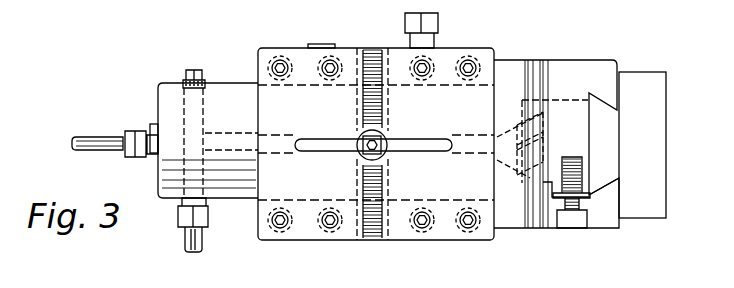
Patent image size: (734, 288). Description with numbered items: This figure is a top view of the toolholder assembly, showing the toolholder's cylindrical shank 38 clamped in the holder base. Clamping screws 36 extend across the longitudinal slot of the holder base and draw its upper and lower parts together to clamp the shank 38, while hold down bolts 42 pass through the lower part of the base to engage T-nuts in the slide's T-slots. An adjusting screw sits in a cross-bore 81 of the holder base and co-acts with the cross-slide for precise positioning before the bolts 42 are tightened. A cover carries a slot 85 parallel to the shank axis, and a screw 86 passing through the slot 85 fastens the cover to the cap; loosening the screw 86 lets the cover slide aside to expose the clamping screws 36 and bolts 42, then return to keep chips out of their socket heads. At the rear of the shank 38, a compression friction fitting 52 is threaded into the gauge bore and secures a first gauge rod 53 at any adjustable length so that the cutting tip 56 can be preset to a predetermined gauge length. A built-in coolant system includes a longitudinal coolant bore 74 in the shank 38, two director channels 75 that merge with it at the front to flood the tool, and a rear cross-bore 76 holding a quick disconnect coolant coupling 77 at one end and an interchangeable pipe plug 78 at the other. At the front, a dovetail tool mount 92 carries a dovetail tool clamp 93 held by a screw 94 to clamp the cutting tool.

The tool-holder clamping screws 36 is at (335, 57).
The cylindrical shank 38 is at (245, 83).
The hold down bolts 42 is at (467, 55).
The compression friction fitting 52 is at (125, 159).
The first gauge rod 53 is at (103, 151).
The cutting tip 56 is at (666, 137).
The coolant bore 74 is at (273, 133).
The director channels 75 is at (510, 128).
The cross-bore 76 is at (182, 115).
The quick disconnect coolant coupling 77 is at (184, 216).
The pipe plug 78 is at (190, 70).
The cross-bore 81 is at (369, 50).
The slot 85 is at (340, 151).
The screw 86 is at (387, 158).
The dovetail tool mount 92 is at (582, 70).
The dovetail tool clamp 93 is at (551, 230).
The screw 94 is at (607, 230).